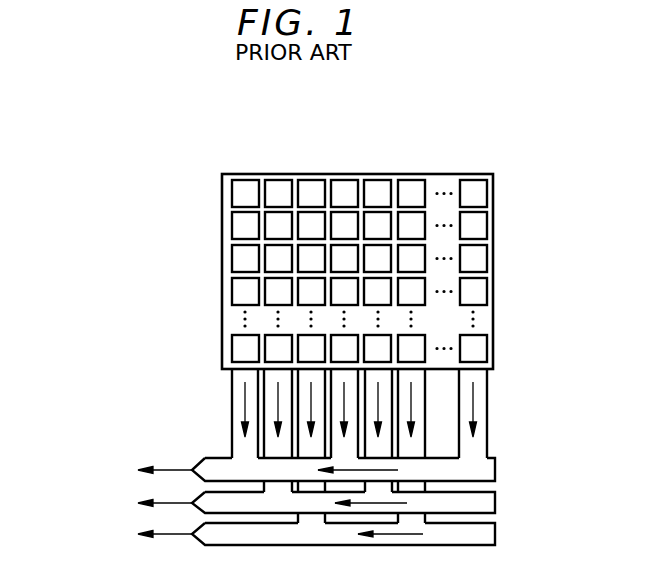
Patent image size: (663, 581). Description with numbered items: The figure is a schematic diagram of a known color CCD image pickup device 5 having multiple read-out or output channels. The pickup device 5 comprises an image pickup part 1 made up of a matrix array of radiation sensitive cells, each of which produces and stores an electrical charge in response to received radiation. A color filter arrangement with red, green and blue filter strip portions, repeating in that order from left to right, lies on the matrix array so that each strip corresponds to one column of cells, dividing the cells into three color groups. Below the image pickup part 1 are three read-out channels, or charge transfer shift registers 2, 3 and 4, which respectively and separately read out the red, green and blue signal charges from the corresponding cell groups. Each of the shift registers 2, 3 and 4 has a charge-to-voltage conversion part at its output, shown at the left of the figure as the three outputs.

The image pickup part 1 is at (493, 292).
The read-out channel (charge transfer shift register) 2 is at (495, 467).
The read-out channel (charge transfer shift register) 3 is at (495, 503).
The read-out channel (charge transfer shift register) 4 is at (495, 533).
The color CCD image pickup device 5 is at (600, 542).